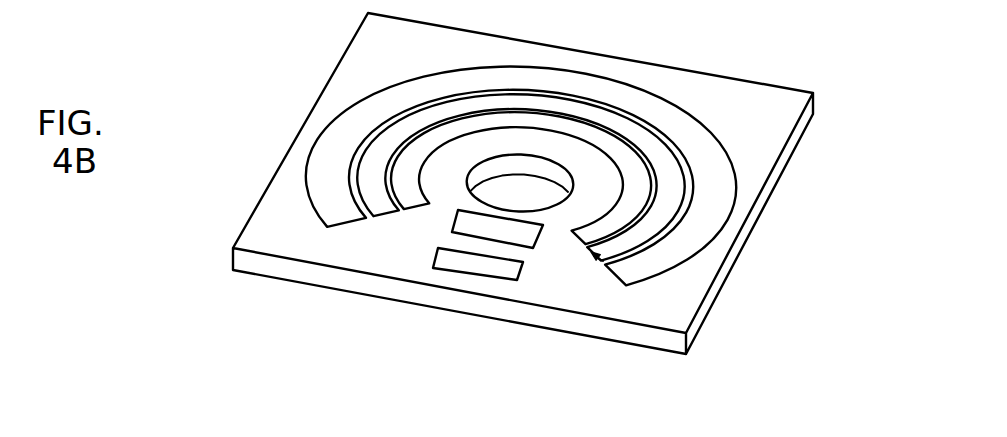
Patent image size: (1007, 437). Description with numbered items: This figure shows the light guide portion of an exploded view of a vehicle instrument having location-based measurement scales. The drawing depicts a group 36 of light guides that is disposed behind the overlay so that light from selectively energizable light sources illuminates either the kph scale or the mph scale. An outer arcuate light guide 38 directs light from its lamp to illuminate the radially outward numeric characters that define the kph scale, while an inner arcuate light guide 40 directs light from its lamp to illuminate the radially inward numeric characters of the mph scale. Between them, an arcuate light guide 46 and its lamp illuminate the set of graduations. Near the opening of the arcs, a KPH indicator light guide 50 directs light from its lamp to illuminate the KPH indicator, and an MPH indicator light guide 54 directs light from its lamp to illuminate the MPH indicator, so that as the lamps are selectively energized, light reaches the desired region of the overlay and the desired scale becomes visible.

The group of light guides 36 is at (733, 58).
The arcuate light guide 38 is at (320, 98).
The arcuate light guide 46 is at (408, 113).
The arcuate light guide 40 is at (424, 176).
The KPH indicator light guide 50 is at (477, 265).
The MPH indicator light guide 54 is at (524, 233).